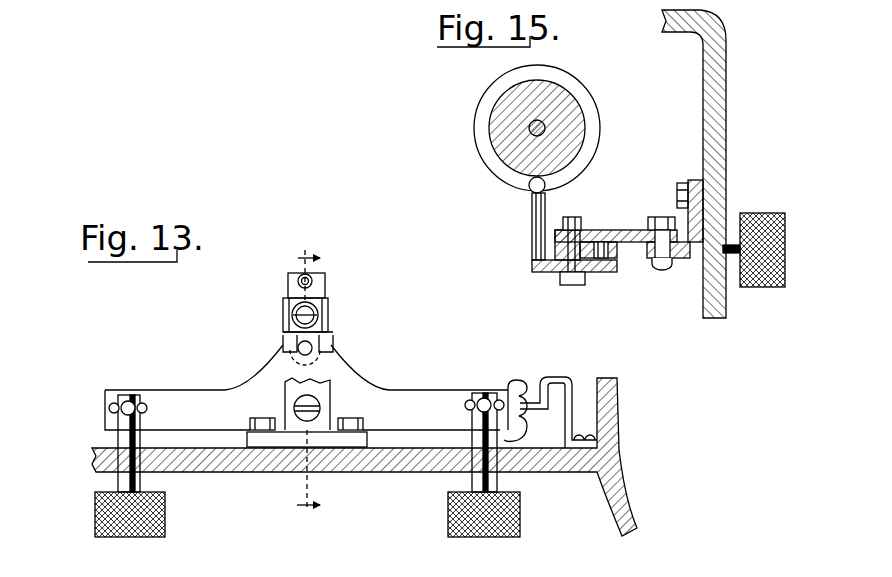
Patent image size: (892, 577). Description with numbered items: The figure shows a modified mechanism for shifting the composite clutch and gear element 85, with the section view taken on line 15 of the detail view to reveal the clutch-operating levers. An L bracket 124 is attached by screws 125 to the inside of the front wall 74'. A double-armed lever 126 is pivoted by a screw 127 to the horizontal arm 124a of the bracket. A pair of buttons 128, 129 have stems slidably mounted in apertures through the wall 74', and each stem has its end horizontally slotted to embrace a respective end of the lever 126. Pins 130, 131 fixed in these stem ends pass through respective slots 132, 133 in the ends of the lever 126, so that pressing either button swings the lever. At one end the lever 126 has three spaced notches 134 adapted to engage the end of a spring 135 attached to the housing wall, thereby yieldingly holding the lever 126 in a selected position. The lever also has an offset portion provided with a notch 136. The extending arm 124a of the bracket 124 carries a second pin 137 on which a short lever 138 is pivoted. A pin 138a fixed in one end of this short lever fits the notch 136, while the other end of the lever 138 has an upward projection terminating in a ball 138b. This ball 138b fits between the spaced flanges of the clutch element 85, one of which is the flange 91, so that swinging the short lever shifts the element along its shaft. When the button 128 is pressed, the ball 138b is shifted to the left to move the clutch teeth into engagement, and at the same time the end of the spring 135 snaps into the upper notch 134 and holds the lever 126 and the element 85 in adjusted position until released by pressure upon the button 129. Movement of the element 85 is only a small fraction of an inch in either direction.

In FIG. 13, the section line 15— 15 is at (308, 382).
In FIG. 13, the front wall 74' is at (364, 457).
In FIG. 15, the front wall 74' is at (709, 164).
In FIG. 15, the composite clutch and gear element 85 is at (589, 98).
In FIG. 15, the flange 91 is at (481, 161).
In FIG. 13, the L bracket 124 is at (346, 447).
In FIG. 15, the L bracket 124 is at (723, 194).
In FIG. 13, the horizontal arm 124a is at (287, 400).
In FIG. 15, the horizontal arm 124a is at (596, 230).
In FIG. 13, the screws 125 is at (250, 423).
In FIG. 15, the screws 125 is at (681, 183).
In FIG. 13, the double-armed lever 126 is at (185, 386).
In FIG. 15, the double-armed lever 126 is at (672, 262).
In FIG. 13, the screw 127 is at (321, 408).
In FIG. 15, the screw 127 is at (655, 217).
In FIG. 13, the button 128 is at (95, 523).
In FIG. 13, the button 129 is at (520, 518).
In FIG. 15, the button 129 is at (762, 288).
In FIG. 13, the pin 130 is at (130, 396).
In FIG. 13, the pin 131 is at (483, 398).
In FIG. 13, the slot 132 is at (110, 414).
In FIG. 13, the slot 133 is at (466, 409).
In FIG. 13, the notches 134 is at (524, 386).
In FIG. 13, the spring 135 is at (578, 376).
In FIG. 13, the notch 136 is at (331, 352).
In FIG. 15, the notch 136 is at (626, 260).
In FIG. 13, the second pin 137 is at (292, 316).
In FIG. 15, the second pin 137 is at (566, 218).
In FIG. 13, the short lever 138 is at (321, 291).
In FIG. 15, the short lever 138 is at (545, 273).
In FIG. 13, the pin 138a is at (297, 352).
In FIG. 15, the pin 138a is at (611, 242).
In FIG. 13, the ball 138b is at (292, 282).
In FIG. 15, the ball 138b is at (533, 191).